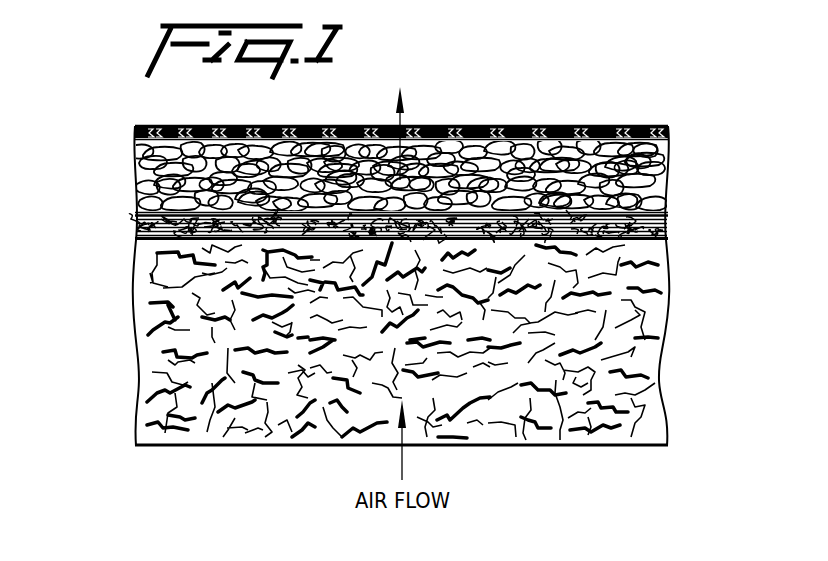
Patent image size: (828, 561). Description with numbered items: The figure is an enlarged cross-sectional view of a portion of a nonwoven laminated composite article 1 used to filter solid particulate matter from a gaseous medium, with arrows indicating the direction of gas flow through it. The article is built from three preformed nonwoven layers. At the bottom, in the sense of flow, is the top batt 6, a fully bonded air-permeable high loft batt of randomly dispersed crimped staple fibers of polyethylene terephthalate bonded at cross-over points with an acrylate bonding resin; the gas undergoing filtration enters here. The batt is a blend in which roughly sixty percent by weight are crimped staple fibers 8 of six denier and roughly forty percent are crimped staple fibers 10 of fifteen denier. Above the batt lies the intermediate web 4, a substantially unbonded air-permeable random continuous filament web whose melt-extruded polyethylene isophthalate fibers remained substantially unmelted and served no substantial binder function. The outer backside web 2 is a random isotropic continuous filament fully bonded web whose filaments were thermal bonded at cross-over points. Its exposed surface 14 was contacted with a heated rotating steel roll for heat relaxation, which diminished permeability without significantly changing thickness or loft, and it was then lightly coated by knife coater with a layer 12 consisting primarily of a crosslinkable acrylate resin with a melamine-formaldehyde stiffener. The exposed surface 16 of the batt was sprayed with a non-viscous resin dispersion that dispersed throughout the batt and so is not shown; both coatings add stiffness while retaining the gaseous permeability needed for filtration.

The nonwoven laminated composite article 1 is at (120, 271).
The outer backside web 2 is at (685, 137).
The intermediate web 4 is at (669, 222).
The high loft batt 6 is at (437, 388).
The crimped staple fibers 8 is at (563, 420).
The crimped staple fibers 10 is at (368, 420).
The layer 12 is at (635, 127).
The exposed surface 14 is at (458, 124).
The exposed surface 16 is at (255, 452).